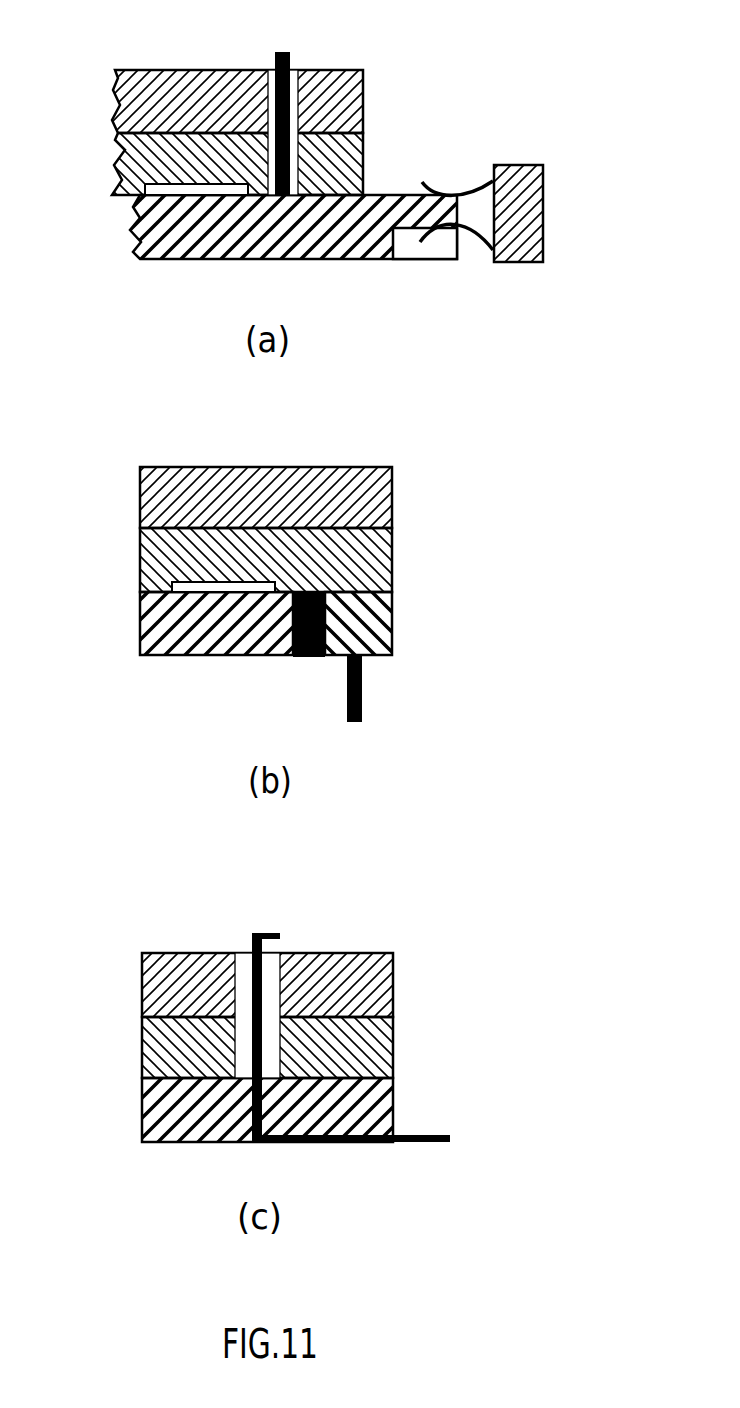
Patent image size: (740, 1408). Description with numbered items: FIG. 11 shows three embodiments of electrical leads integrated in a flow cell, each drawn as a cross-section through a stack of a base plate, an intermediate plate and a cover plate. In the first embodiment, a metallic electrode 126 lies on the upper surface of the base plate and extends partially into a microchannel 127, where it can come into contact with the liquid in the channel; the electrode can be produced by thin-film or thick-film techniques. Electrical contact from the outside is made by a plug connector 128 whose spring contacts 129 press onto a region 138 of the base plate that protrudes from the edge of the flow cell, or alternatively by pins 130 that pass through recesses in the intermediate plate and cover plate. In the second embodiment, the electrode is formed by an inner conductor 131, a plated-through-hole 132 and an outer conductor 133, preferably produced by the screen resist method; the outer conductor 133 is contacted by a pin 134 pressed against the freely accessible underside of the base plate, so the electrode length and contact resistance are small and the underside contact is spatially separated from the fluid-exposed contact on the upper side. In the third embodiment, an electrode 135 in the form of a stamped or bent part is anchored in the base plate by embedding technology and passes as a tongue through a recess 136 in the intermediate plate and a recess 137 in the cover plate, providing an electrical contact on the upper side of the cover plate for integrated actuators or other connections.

The metallic electrode 126 is at (378, 195).
The microchannel 127 is at (170, 190).
The plug connector 128 is at (548, 200).
The spring contacts 129 is at (478, 183).
The pins 130 is at (291, 63).
The region of the base plate 138 is at (422, 240).
The inner conductor 131 is at (191, 656).
The plated-through-hole 132 is at (392, 632).
The outer conductor 133 is at (378, 662).
The pin 134 is at (362, 683).
The electrode 135 is at (393, 1037).
The recess 136 is at (165, 1001).
The recess 137 is at (170, 1051).